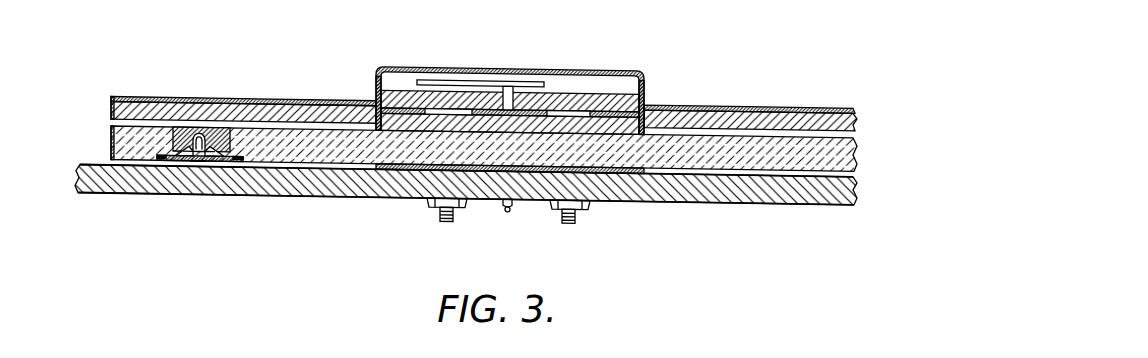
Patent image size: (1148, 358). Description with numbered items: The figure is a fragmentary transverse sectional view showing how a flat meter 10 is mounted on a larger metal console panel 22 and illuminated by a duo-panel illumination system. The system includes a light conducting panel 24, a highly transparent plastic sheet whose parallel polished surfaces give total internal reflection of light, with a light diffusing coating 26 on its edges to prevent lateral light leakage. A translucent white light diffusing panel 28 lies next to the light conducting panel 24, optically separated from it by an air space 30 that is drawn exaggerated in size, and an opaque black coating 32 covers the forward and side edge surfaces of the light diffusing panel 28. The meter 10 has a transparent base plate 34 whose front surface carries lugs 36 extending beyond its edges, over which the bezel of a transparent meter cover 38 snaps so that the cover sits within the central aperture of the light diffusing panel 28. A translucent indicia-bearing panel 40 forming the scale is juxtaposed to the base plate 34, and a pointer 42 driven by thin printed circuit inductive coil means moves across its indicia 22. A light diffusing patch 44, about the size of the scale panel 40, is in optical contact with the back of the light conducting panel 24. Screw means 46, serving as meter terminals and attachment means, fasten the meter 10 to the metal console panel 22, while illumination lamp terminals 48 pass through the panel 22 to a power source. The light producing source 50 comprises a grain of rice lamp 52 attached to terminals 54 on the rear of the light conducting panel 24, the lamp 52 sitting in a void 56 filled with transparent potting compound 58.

The flat meter 10 is at (508, 76).
The metal console panel 22 is at (730, 198).
The light conducting panel 24 is at (323, 154).
The light diffusing coating 26 is at (466, 179).
The light diffusing panel 28 is at (220, 108).
The air space 30 is at (466, 96).
The opaque coating 32 is at (305, 97).
The base plate 34 is at (625, 114).
The lugs 36 is at (392, 104).
The meter cover 38 is at (508, 86).
The indicia-bearing panel 40 is at (600, 87).
The pointer 42 is at (447, 80).
The light diffusing patch 44 is at (412, 165).
The screw means 46 is at (577, 211).
The illumination lamp terminals 48 is at (507, 205).
The light producing source 50 is at (197, 165).
The lamp 52 is at (191, 130).
The terminals 54 is at (156, 159).
The void 56 is at (180, 150).
The potting compound 58 is at (177, 144).